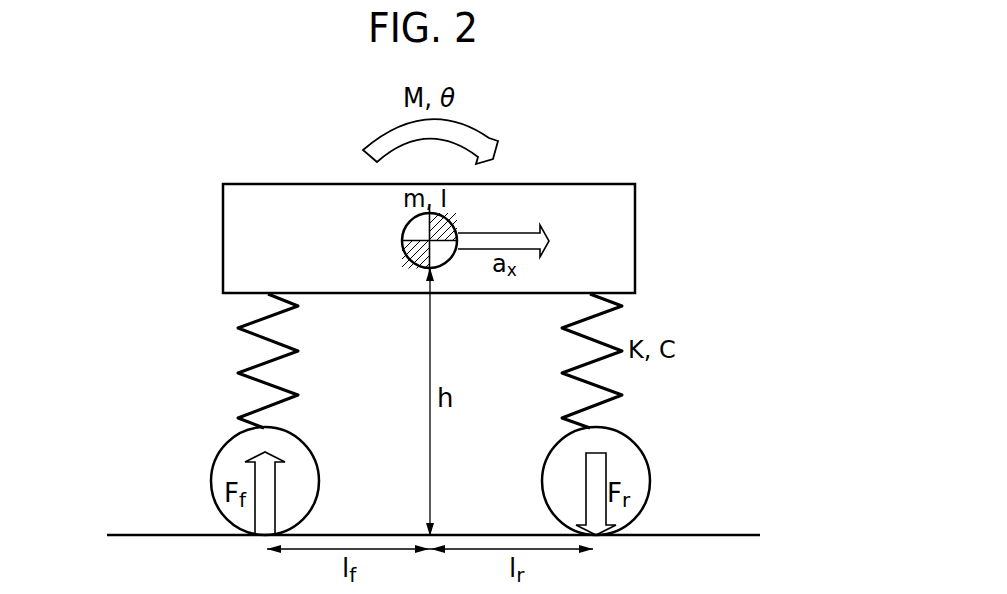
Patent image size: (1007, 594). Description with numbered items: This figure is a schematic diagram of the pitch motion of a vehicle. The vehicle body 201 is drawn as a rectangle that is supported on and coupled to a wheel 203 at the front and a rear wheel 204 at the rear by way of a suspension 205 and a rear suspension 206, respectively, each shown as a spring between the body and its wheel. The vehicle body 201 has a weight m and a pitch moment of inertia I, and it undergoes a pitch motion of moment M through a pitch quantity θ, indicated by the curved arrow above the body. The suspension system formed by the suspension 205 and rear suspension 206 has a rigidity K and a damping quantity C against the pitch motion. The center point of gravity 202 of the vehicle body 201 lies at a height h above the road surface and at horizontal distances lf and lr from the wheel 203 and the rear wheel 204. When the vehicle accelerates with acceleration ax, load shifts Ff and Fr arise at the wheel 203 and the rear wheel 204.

The vehicle body 201 is at (598, 183).
The center point of gravity 202 is at (408, 265).
The wheel 203 is at (238, 515).
The rear wheel 204 is at (627, 515).
The suspension 205 is at (248, 322).
The rear suspension 206 is at (577, 322).